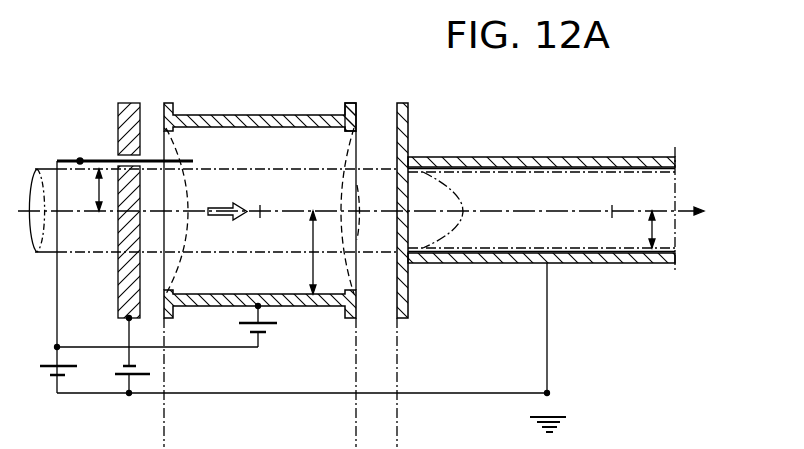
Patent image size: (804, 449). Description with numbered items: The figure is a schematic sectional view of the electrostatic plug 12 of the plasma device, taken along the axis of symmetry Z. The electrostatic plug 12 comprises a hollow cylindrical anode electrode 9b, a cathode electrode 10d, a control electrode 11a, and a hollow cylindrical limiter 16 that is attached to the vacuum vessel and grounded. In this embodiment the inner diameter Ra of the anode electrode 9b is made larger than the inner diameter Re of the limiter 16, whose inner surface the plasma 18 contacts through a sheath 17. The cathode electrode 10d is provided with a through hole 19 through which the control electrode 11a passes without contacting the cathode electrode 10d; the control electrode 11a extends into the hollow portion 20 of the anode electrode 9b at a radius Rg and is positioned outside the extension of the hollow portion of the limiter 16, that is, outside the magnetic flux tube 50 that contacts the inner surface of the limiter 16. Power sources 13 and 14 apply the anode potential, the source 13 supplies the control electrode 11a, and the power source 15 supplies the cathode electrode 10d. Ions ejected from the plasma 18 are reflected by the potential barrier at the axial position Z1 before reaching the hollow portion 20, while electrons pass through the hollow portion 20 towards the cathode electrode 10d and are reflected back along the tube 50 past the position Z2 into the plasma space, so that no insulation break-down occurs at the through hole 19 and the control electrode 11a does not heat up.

The electrostatic plug 12 is at (192, 48).
The cathode electrode 10d is at (128, 103).
The hollow portion 20 is at (221, 135).
The anode electrode 9b is at (294, 115).
The control electrode 11a is at (80, 158).
The through hole 19 is at (117, 156).
The magnetic flux tube 50 is at (102, 255).
The limiter 16 is at (508, 158).
The sheath 17 is at (571, 172).
The plasma 18 is at (653, 178).
The power source 14 is at (274, 330).
The power source 13 is at (48, 378).
The power source 15 is at (122, 380).
The grid radius Rg is at (85, 190).
The anode radius Ra is at (300, 252).
The electrode radius Re is at (637, 229).
The axial position Z1 is at (261, 196).
The axial position Z2 is at (610, 196).
The axial coordinate Z is at (717, 214).